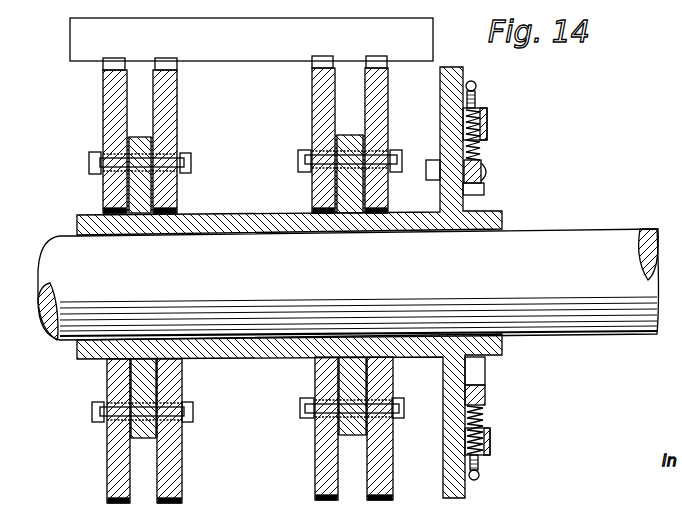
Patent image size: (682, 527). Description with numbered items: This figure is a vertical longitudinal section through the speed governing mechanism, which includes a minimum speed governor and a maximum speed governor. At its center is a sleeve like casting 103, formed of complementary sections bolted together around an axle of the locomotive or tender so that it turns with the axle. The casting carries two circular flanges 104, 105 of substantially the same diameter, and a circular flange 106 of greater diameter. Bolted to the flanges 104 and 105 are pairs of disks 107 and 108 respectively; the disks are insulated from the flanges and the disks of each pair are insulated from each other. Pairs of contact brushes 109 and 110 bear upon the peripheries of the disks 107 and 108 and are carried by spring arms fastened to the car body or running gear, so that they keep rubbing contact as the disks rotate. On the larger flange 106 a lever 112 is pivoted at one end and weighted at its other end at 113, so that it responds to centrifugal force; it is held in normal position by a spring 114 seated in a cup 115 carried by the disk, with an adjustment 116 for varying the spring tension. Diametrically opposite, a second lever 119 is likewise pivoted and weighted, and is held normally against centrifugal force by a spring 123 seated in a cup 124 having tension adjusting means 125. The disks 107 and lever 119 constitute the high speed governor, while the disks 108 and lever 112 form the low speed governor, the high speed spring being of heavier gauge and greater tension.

The sleeve like casting 103 is at (494, 219).
The circular flange 104 is at (140, 389).
The circular flange 105 is at (352, 437).
The circular flange 106 is at (452, 499).
The pair of disks 107 is at (107, 449).
The pair of disks 108 is at (325, 490).
The pair of contact brushes 109 is at (103, 67).
The pair of contact brushes 110 is at (312, 66).
The lever 112 is at (487, 396).
The weight 113 is at (472, 373).
The spring 114 is at (487, 418).
The cup 115 is at (492, 445).
The adjustment 116 is at (480, 475).
The second lever 119 is at (490, 172).
The spring 123 is at (484, 148).
The cup 124 is at (489, 115).
The tension adjusting means 125 is at (477, 100).